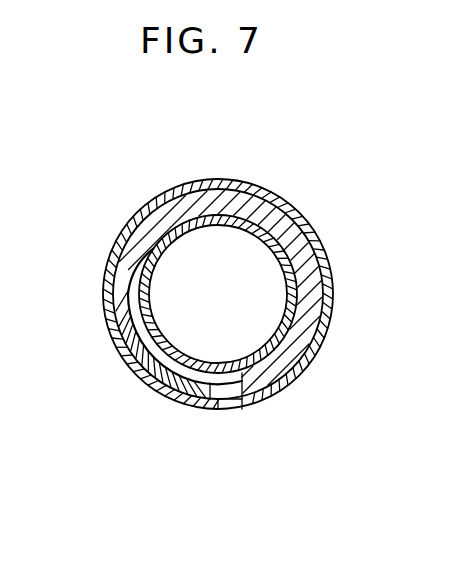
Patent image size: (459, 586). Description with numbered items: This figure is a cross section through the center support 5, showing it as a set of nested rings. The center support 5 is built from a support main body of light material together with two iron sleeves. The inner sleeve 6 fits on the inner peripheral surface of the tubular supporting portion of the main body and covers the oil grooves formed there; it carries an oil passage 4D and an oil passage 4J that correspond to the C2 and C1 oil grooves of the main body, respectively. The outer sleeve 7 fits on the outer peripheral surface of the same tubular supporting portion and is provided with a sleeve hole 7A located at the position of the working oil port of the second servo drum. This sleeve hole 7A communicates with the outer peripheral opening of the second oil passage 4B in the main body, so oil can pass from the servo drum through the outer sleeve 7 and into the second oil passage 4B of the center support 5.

The center support 5 is at (298, 203).
The inner sleeve 6 is at (298, 259).
The outer sleeve 7 is at (326, 315).
The oil passage 4J is at (118, 298).
The oil passage 4D is at (168, 395).
The sleeve hole 7A is at (229, 409).
The second oil passage 4B is at (252, 408).